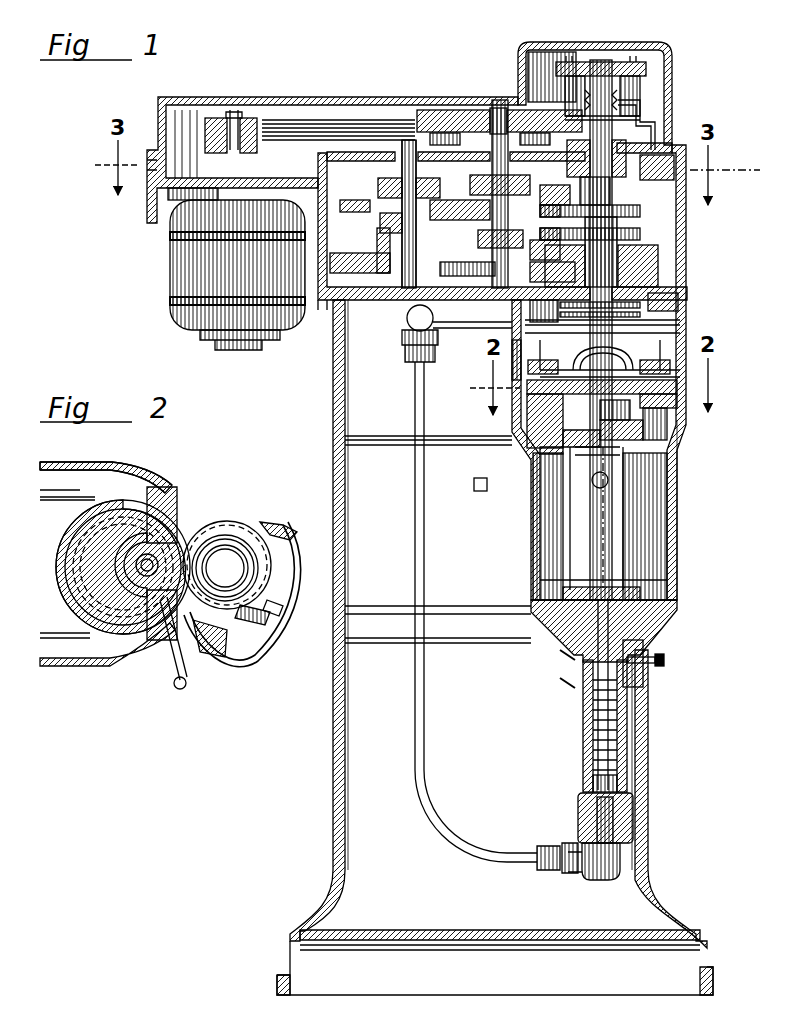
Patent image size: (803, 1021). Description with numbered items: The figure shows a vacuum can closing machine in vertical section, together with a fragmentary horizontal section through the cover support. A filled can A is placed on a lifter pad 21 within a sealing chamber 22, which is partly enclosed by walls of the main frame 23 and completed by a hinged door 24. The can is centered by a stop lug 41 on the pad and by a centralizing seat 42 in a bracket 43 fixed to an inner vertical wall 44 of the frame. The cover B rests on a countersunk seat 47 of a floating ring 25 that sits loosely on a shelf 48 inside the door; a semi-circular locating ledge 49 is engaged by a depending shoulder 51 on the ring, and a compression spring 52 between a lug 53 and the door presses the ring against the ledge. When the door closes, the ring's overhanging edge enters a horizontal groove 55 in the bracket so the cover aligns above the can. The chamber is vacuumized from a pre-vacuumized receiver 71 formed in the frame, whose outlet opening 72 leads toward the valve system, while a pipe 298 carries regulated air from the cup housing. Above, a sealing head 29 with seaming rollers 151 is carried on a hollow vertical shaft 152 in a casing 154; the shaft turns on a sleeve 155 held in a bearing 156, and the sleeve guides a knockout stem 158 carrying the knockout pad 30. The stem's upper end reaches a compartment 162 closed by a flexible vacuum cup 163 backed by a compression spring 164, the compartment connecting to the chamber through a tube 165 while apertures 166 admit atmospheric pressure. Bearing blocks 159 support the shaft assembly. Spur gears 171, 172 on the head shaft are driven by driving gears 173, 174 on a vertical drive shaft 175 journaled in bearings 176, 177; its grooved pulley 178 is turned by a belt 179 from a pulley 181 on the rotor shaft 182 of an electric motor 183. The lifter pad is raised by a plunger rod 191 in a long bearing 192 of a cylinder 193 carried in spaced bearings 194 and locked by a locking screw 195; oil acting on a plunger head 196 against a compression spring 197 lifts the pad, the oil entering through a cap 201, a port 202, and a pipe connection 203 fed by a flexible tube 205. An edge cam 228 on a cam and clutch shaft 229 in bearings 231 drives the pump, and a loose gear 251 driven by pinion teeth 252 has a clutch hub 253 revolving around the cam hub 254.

In FIG. 1, the lifter pad 21 is at (665, 590).
In FIG. 2, the lifter pad 21 is at (165, 540).
In FIG. 1, the sealing chamber 22 is at (548, 552).
In FIG. 2, the sealing chamber 22 is at (158, 645).
In FIG. 1, the frame 23 is at (337, 735).
In FIG. 2, the frame 23 is at (67, 670).
In FIG. 1, the door 24 is at (680, 560).
In FIG. 2, the door 24 is at (280, 622).
In FIG. 1, the floating ring 25 is at (700, 377).
In FIG. 2, the floating ring 25 is at (225, 540).
In FIG. 1, the sealing head 29 is at (690, 318).
In FIG. 1, the knockout pad 30 is at (688, 332).
In FIG. 1, the stop lug 41 is at (540, 582).
In FIG. 1, the centralizing seat 42 is at (515, 440).
In FIG. 2, the centralizing seat 42 is at (170, 545).
In FIG. 1, the bracket 43 is at (540, 450).
In FIG. 2, the bracket 43 is at (88, 587).
In FIG. 1, the inner vertical wall 44 is at (530, 520).
In FIG. 2, the inner vertical wall 44 is at (85, 510).
In FIG. 1, the countersunk seat 47 is at (520, 420).
In FIG. 2, the countersunk seat 47 is at (235, 535).
In FIG. 1, the shelf 48 is at (700, 426).
In FIG. 2, the shelf 48 is at (235, 640).
In FIG. 1, the locating ledge 49 is at (700, 452).
In FIG. 2, the locating ledge 49 is at (280, 540).
In FIG. 1, the depending shoulder 51 is at (702, 437).
In FIG. 1, the compression spring 52 is at (690, 392).
In FIG. 2, the compression spring 52 is at (268, 620).
In FIG. 2, the lug 53 is at (275, 605).
In FIG. 1, the horizontal groove 55 is at (500, 387).
In FIG. 2, the horizontal groove 55 is at (115, 468).
In FIG. 1, the receiver 71 is at (360, 778).
In FIG. 2, the receiver 71 is at (75, 470).
In FIG. 1, the outlet opening 72 is at (470, 489).
In FIG. 1, the seaming rollers 151 is at (660, 364).
In FIG. 1, the hollow vertical shaft 152 is at (622, 254).
In FIG. 1, the casing 154 is at (685, 165).
In FIG. 1, the sleeve 155 is at (606, 122).
In FIG. 1, the bearing 156 is at (628, 148).
In FIG. 1, the knockout stem 158 is at (600, 115).
In FIG. 1, the bearing block 159 is at (628, 272).
In FIG. 1, the compartment 162 is at (516, 92).
In FIG. 1, the flexible vacuum cup 163 is at (612, 68).
In FIG. 1, the compression spring 164 is at (585, 62).
In FIG. 1, the tube 165 is at (622, 105).
In FIG. 1, the apertures 166 is at (520, 72).
In FIG. 1, the spur gear 171 is at (648, 236).
In FIG. 1, the spur gear 172 is at (650, 215).
In FIG. 1, the driving gear 173 is at (540, 245).
In FIG. 1, the driving gear 174 is at (550, 225).
In FIG. 1, the vertical drive shaft 175 is at (571, 193).
In FIG. 1, the bearing 176 is at (485, 275).
In FIG. 1, the bearing 177 is at (500, 180).
In FIG. 1, the grooved pulley 178 is at (430, 112).
In FIG. 1, the belt 179 is at (322, 122).
In FIG. 1, the pulley 181 is at (256, 118).
In FIG. 1, the rotor shaft 182 is at (233, 118).
In FIG. 1, the electric motor 183 is at (226, 255).
In FIG. 1, the plunger rod 191 is at (650, 615).
In FIG. 1, the bearing 192 is at (650, 680).
In FIG. 1, the cylinder 193 is at (630, 735).
In FIG. 1, the bearings 194 is at (570, 680).
In FIG. 1, the locking screw 195 is at (690, 660).
In FIG. 1, the plunger head 196 is at (625, 785).
In FIG. 1, the compression spring 197 is at (590, 735).
In FIG. 1, the cap 201 is at (578, 832).
In FIG. 1, the port 202 is at (635, 815).
In FIG. 1, the pipe connection 203 is at (620, 860).
In FIG. 1, the flexible tube 205 is at (425, 815).
In FIG. 1, the edge cam 228 is at (345, 180).
In FIG. 1, the cam and clutch shaft 229 is at (445, 300).
In FIG. 1, the bearings 231 is at (405, 140).
In FIG. 1, the gear 251 is at (322, 318).
In FIG. 1, the pinion teeth 252 is at (518, 265).
In FIG. 1, the clutch hub 253 is at (380, 240).
In FIG. 1, the cam hub 254 is at (385, 225).
In FIG. 1, the pipe 298 is at (470, 318).
In FIG. 1, the can A is at (620, 505).
In FIG. 1, the cover B is at (650, 432).
In FIG. 2, the cover B is at (215, 545).